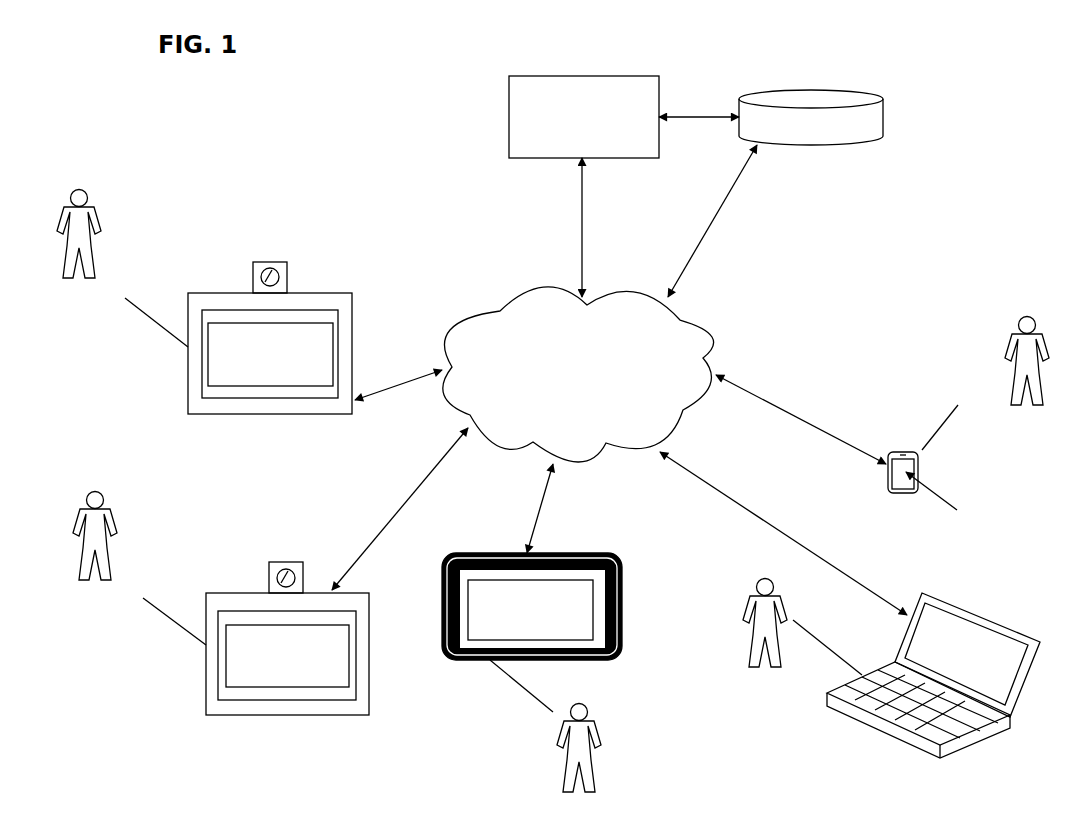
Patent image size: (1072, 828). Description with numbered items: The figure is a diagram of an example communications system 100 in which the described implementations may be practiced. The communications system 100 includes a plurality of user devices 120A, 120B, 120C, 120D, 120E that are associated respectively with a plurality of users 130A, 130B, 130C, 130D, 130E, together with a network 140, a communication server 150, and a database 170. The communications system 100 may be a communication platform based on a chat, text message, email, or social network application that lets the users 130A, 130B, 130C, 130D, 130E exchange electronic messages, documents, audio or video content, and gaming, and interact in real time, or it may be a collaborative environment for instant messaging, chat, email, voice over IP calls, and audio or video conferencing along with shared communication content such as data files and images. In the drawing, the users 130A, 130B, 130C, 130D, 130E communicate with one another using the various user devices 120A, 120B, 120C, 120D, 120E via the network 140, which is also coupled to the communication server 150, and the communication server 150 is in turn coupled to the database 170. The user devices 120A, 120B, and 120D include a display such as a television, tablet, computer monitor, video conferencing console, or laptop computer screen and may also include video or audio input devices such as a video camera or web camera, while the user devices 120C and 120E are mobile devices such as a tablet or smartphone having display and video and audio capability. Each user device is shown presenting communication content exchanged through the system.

The communications system 100 is at (952, 71).
The communication server 150 is at (659, 82).
The database 170 is at (883, 118).
The network 140 is at (705, 338).
The user device 120A is at (352, 300).
The user device 120B is at (369, 697).
The user device 120C is at (622, 597).
The user device 120D is at (1003, 727).
The user device 120E is at (919, 465).
The user 130A is at (100, 216).
The user 130B is at (115, 518).
The user 130C is at (563, 768).
The user 130D is at (752, 642).
The user 130E is at (1012, 383).